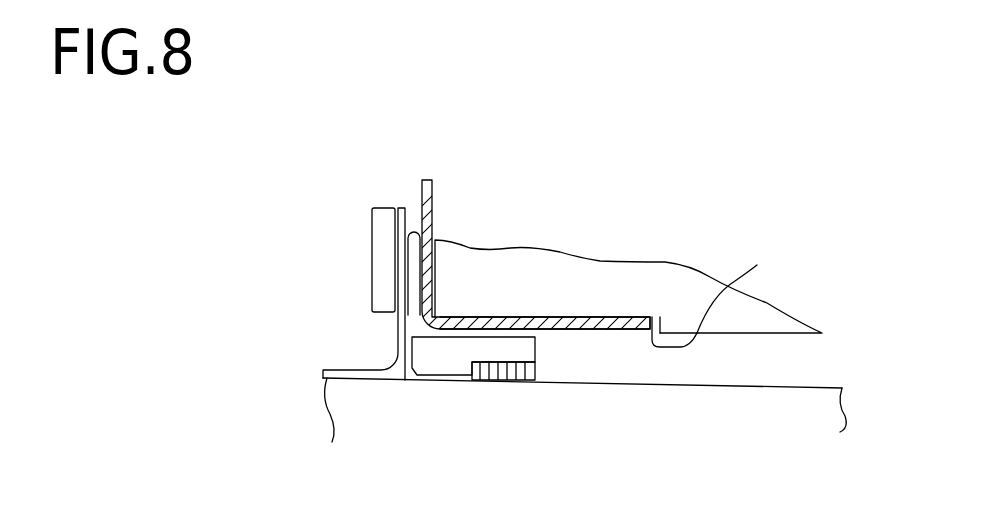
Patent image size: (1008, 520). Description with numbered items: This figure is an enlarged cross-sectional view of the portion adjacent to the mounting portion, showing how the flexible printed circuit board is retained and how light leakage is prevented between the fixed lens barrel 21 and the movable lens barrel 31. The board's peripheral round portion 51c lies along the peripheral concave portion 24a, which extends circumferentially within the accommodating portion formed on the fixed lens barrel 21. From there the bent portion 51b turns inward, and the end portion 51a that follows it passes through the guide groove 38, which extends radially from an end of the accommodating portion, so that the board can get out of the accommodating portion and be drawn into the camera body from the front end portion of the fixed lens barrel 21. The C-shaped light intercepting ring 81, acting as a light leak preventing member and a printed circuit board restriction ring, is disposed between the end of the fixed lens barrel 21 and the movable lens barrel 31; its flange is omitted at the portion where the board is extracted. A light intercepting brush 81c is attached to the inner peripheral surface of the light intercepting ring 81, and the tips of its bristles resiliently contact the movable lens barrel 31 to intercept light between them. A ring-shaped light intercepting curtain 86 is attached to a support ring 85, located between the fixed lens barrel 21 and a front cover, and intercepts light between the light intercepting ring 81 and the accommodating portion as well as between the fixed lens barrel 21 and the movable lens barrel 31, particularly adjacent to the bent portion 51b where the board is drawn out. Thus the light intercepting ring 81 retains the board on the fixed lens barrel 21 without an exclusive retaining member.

The movable lens barrel 31 is at (823, 388).
The light intercepting curtain 86 is at (340, 368).
The support ring 85 is at (378, 247).
The guide groove 38 is at (410, 300).
The end portion of flexible printed circuit board 51a is at (430, 187).
The bent portion of flexible printed circuit board 51b is at (483, 319).
The peripheral round portion of flexible printed circuit board 51c is at (628, 318).
The fixed lens barrel 21 is at (695, 280).
The peripheral concave portion 24a is at (758, 287).
The light intercepting ring 81 is at (443, 353).
The light intercepting brush 81c is at (486, 382).